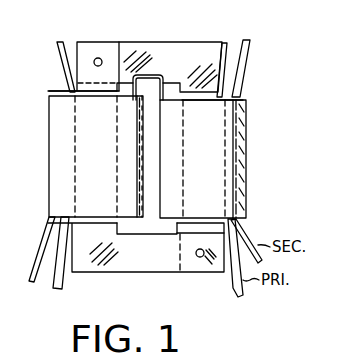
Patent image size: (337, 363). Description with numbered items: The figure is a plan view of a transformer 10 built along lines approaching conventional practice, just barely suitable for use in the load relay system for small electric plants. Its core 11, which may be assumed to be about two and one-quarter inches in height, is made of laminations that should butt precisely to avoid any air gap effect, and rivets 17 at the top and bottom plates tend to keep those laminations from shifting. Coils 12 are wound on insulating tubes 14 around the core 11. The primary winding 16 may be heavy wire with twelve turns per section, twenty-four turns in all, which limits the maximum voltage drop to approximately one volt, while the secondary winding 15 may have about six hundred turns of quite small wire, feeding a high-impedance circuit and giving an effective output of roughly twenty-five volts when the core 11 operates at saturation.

The transformer 10 is at (35, 168).
The core 11 is at (191, 57).
The coils 12 is at (217, 138).
The insulating tubes 14 is at (224, 42).
The secondary winding 15 is at (246, 238).
The primary winding 16 is at (250, 58).
The rivets 17 is at (101, 58).